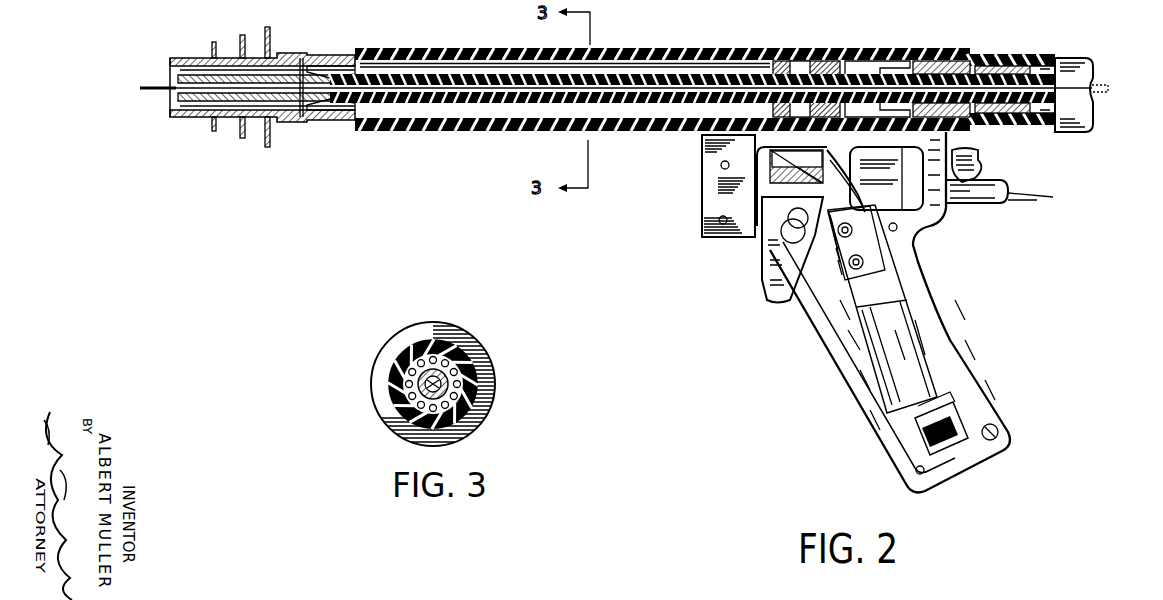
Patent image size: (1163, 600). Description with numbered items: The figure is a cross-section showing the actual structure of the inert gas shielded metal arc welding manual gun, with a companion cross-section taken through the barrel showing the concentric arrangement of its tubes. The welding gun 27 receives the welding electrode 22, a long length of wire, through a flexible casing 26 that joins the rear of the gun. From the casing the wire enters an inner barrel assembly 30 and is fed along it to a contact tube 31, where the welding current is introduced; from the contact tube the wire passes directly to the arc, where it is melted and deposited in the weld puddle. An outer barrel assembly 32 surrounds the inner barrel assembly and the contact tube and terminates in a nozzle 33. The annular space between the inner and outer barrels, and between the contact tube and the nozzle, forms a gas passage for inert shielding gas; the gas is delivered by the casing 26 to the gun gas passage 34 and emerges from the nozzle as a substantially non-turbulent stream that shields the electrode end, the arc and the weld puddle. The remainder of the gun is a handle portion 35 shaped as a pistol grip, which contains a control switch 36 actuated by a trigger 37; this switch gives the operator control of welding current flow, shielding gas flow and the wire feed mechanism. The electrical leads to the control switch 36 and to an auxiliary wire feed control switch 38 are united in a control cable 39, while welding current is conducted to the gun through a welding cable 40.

In FIG. 2, the welding electrode 22 is at (166, 86).
In FIG. 3, the welding electrode 22 is at (418, 387).
In FIG. 2, the flexible casing 26 is at (1075, 70).
In FIG. 2, the welding gun 27 is at (760, 42).
In FIG. 2, the inner barrel assembly 30 is at (662, 72).
In FIG. 3, the inner barrel assembly 30 is at (470, 392).
In FIG. 2, the contact tube 31 is at (203, 58).
In FIG. 2, the outer barrel assembly 32 is at (421, 47).
In FIG. 3, the outer barrel assembly 32 is at (453, 326).
In FIG. 2, the nozzle 33 is at (203, 118).
In FIG. 2, the gun gas passage 34 is at (955, 58).
In FIG. 2, the handle portion 35 is at (948, 338).
In FIG. 2, the control switch 36 is at (843, 268).
In FIG. 2, the trigger 37 is at (762, 271).
In FIG. 2, the auxiliary wire feed control switch 38 is at (917, 438).
In FIG. 2, the control cable 39 is at (977, 205).
In FIG. 2, the welding cable 40 is at (978, 160).